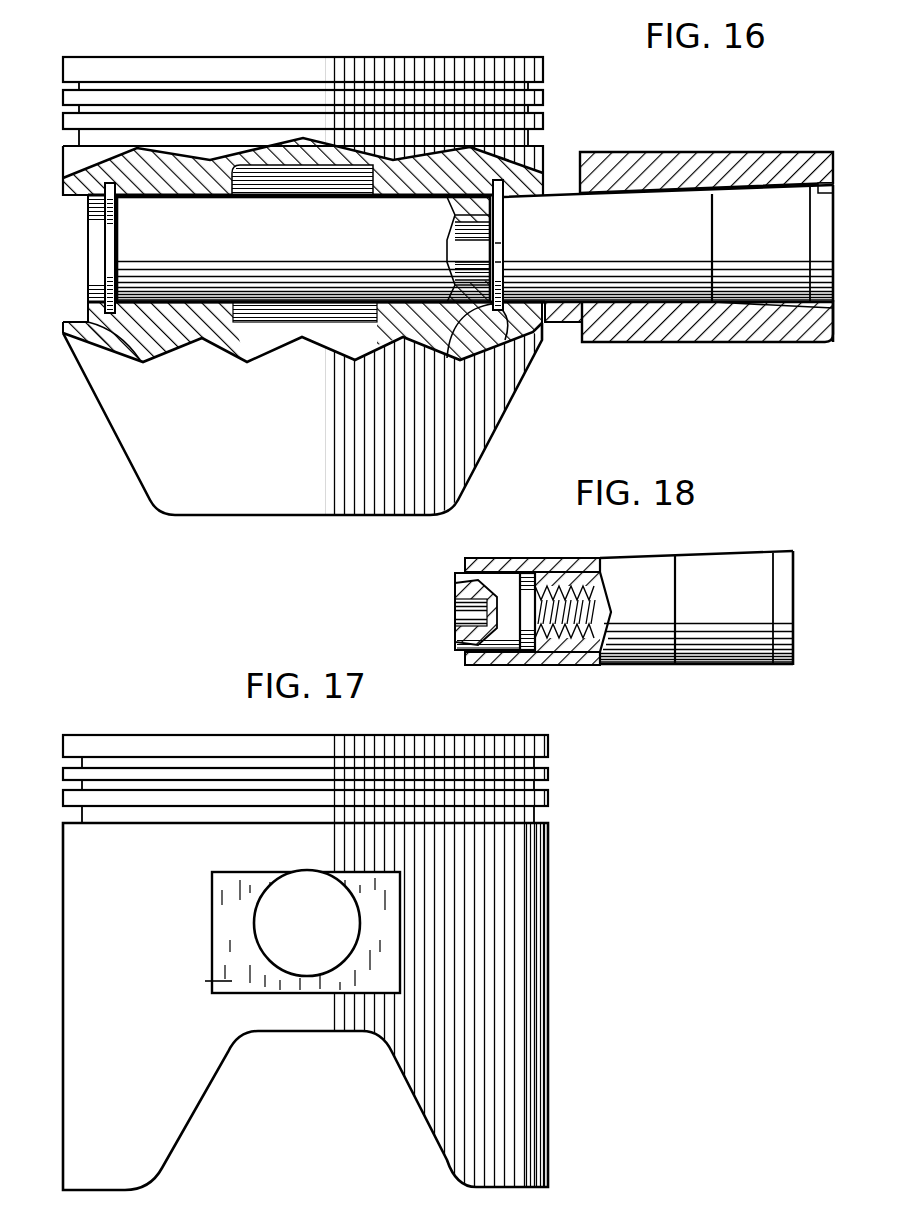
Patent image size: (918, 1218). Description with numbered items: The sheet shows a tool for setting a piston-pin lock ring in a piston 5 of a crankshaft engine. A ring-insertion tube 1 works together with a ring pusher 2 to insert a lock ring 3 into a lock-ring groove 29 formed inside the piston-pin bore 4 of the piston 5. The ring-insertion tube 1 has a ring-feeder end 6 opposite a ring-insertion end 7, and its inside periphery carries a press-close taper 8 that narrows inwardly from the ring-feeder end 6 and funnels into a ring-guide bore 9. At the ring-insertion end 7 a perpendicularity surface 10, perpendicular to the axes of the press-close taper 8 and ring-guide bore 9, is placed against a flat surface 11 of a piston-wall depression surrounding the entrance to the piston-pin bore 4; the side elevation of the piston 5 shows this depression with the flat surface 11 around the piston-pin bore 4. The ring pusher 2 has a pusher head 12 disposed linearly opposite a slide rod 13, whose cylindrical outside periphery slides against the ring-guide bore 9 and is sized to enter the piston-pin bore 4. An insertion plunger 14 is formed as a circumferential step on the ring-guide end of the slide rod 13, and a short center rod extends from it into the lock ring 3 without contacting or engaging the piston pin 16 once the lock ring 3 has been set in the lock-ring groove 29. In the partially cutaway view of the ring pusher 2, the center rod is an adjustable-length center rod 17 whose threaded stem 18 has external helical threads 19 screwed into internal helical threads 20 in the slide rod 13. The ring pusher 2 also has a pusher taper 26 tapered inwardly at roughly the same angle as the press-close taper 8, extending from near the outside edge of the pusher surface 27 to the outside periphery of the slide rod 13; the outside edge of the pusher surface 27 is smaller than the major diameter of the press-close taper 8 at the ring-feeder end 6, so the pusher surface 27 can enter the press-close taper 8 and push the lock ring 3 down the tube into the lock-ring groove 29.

In FIG. 16, the ring-insertion tube 1 is at (694, 152).
In FIG. 16, the ring pusher 2 is at (482, 241).
In FIG. 18, the ring pusher 2 is at (442, 611).
In FIG. 16, the lock ring 3 is at (112, 262).
In FIG. 16, the piston-pin bore 4 is at (160, 345).
In FIG. 17, the piston-pin bore 4 is at (314, 939).
In FIG. 16, the piston 5 is at (145, 28).
In FIG. 17, the piston 5 is at (148, 701).
In FIG. 16, the ring-feeder end 6 is at (833, 346).
In FIG. 16, the ring-insertion end 7 is at (578, 340).
In FIG. 16, the press-close taper 8 is at (780, 306).
In FIG. 16, the ring-guide bore 9 is at (648, 345).
In FIG. 16, the perpendicularity surface 10 is at (128, 352).
In FIG. 17, the flat surface 11 is at (250, 957).
In FIG. 16, the pusher head 12 is at (820, 215).
In FIG. 18, the pusher head 12 is at (785, 565).
In FIG. 16, the slide rod 13 is at (617, 254).
In FIG. 18, the slide rod 13 is at (642, 621).
In FIG. 16, the insertion plunger 14 is at (504, 212).
In FIG. 18, the insertion plunger 14 is at (465, 658).
In FIG. 16, the piston pin 16 is at (285, 254).
In FIG. 18, the adjustable-length center rod 17 is at (458, 580).
In FIG. 18, the threaded stem 18 is at (513, 652).
In FIG. 18, the external helical threads 19 is at (545, 652).
In FIG. 18, the internal helical threads 20 is at (602, 645).
In FIG. 16, the pusher taper 26 is at (764, 247).
In FIG. 18, the pusher taper 26 is at (733, 621).
In FIG. 16, the pusher surface 27 is at (835, 232).
In FIG. 18, the pusher surface 27 is at (793, 607).
In FIG. 16, the lock-ring groove 29 is at (458, 335).